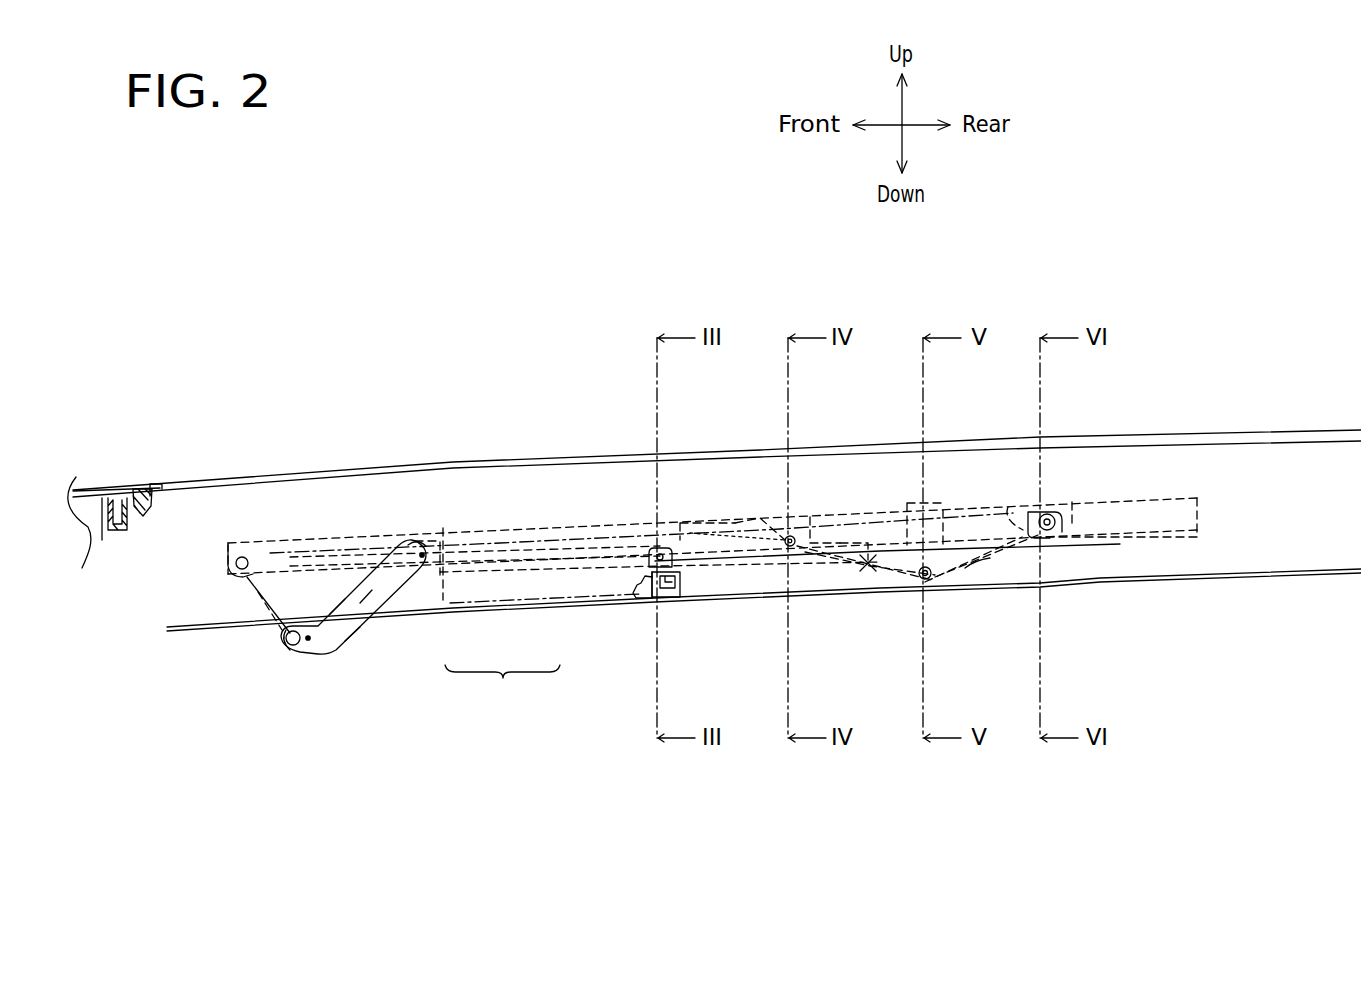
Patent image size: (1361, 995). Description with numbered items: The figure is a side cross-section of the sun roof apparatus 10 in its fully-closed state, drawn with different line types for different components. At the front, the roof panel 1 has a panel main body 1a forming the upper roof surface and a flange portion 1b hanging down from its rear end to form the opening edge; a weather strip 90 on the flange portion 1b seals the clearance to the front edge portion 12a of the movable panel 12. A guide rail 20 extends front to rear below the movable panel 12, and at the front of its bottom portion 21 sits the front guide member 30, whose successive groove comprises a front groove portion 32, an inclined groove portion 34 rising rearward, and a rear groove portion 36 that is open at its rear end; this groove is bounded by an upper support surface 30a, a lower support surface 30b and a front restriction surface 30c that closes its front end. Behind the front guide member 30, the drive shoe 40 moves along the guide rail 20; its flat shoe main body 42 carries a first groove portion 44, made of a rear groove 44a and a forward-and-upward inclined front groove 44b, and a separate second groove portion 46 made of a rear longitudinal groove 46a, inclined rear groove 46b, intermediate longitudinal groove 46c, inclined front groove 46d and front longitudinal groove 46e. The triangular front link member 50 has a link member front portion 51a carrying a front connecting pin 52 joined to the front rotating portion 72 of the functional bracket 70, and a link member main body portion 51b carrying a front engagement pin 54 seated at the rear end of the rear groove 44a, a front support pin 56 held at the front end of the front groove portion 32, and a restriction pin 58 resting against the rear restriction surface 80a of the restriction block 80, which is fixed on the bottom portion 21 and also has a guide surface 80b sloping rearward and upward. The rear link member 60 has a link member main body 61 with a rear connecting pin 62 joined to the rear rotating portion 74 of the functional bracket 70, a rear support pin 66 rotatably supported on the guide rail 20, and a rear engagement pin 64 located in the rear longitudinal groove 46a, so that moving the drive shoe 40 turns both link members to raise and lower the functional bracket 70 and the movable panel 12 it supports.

The roof panel 1 is at (82, 470).
The panel main body 1a is at (103, 488).
The flange portion 1b is at (102, 540).
The sun roof apparatus 10 is at (254, 389).
The movable panel 12 is at (744, 450).
The front edge portion 12a is at (172, 482).
The guide rail 20 is at (1181, 594).
The bottom portion 21 is at (815, 592).
The front guide member 30 is at (448, 650).
The upper support surface 30a is at (348, 594).
The lower support surface 30b is at (347, 648).
The front restriction surface 30c is at (281, 645).
The front groove portion 32 is at (308, 642).
The inclined groove portion 34 is at (366, 600).
The rear groove portion 36 is at (422, 558).
The drive shoe 40 is at (612, 532).
The shoe main body 42 is at (514, 537).
The first groove portion 44 is at (501, 616).
The rear groove 44a is at (534, 580).
The front groove 44b is at (447, 603).
The second groove portion 46 is at (868, 572).
The rear longitudinal groove 46a is at (907, 520).
The inclined rear groove 46b is at (867, 550).
The intermediate longitudinal groove 46c is at (808, 530).
The inclined front groove 46d is at (757, 513).
The front longitudinal groove 46e is at (708, 525).
The front link member 50 is at (322, 545).
The link member front portion 51a is at (262, 600).
The link member main body portion 51b is at (353, 557).
The front connecting pin 52 is at (227, 557).
The front engagement pin 54 is at (667, 548).
The front support pin 56 is at (290, 647).
The restriction pin 58 is at (641, 605).
The rear link member 60 is at (988, 565).
The link member main body 61 is at (963, 570).
The rear connecting pin 62 is at (1058, 528).
The rear engagement pin 64 is at (908, 602).
The rear support pin 66 is at (793, 470).
The functional bracket 70 is at (560, 522).
The front rotating portion 72 is at (280, 538).
The rear rotating portion 74 is at (1057, 495).
The restriction block 80 is at (750, 612).
The rear restriction surface 80a is at (647, 603).
The guide surface 80b is at (680, 574).
The weather strip 90 is at (140, 488).